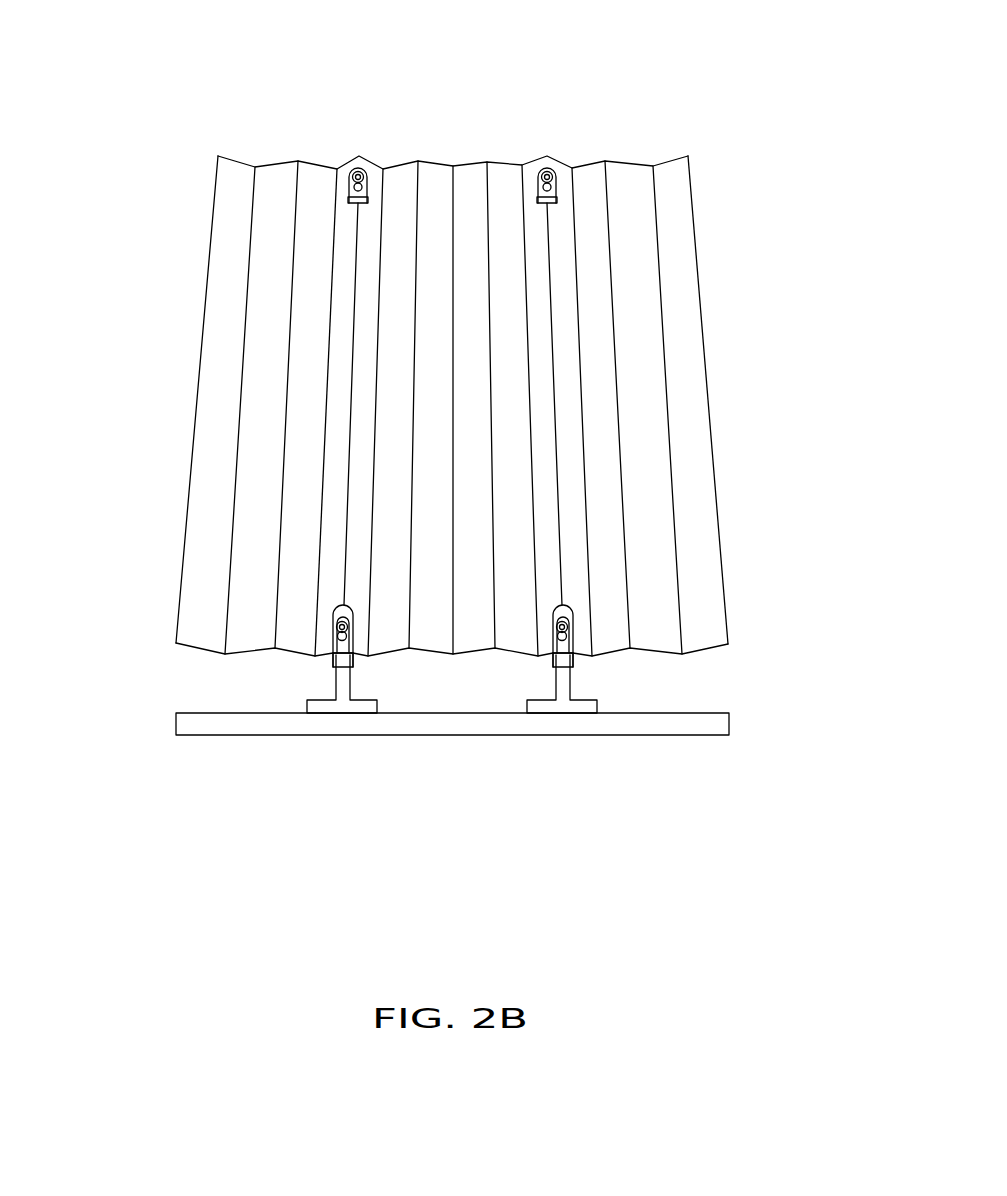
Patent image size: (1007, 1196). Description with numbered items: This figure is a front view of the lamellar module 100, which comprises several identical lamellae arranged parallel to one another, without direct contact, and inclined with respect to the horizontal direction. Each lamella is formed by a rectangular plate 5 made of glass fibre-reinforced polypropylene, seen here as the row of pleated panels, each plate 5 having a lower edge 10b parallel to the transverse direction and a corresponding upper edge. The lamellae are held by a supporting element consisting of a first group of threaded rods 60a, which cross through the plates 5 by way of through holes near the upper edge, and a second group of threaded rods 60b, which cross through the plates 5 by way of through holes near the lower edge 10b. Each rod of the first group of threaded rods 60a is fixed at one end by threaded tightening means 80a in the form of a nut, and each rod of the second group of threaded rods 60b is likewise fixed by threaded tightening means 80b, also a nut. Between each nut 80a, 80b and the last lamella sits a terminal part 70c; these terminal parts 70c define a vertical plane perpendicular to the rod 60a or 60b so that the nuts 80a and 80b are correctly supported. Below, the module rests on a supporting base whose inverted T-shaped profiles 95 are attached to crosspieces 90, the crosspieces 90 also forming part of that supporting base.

The lamellar module 100 is at (451, 436).
The plate 5 is at (526, 435).
The lower edge 10b is at (717, 647).
The terminal part 70c is at (763, 560).
The first group of threaded rods 60a is at (355, 171).
The second group of threaded rods 60b is at (336, 647).
The threaded tightening means 80a is at (363, 194).
The threaded tightening means 80b is at (338, 628).
The inverted T-shaped profiles 95 is at (452, 752).
The crosspieces 90 is at (595, 725).